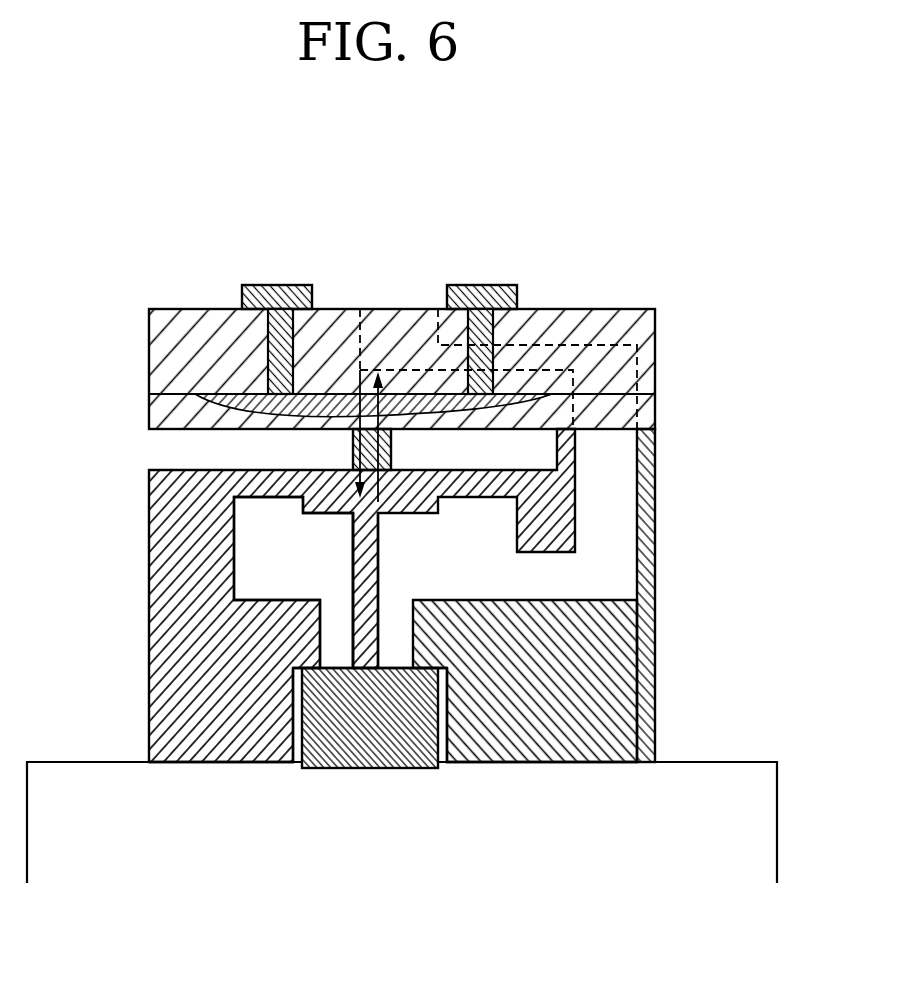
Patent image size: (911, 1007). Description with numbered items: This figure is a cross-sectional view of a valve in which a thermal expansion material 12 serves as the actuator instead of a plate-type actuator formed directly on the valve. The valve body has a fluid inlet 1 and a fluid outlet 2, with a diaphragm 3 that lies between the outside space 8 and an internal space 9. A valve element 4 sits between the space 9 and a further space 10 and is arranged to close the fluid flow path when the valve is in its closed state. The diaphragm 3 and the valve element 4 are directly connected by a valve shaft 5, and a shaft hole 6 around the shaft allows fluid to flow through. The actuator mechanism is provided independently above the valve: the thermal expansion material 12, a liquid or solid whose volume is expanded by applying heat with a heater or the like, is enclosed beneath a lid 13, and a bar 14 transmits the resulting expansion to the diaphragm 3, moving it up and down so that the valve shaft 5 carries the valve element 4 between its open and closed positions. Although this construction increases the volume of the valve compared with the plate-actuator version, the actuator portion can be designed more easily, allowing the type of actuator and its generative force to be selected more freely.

The fluid inlet 1 is at (297, 767).
The fluid outlet 2 is at (608, 503).
The diaphragm 3 is at (237, 485).
The valve element 4 is at (387, 740).
The valve shaft 5 is at (352, 632).
The shaft hole 6 is at (387, 637).
The outside space 8 is at (203, 456).
The space 9 is at (305, 545).
The space 10 is at (402, 843).
The thermal expansion material 12 is at (254, 403).
The lid 13 is at (283, 284).
The bar 14 is at (394, 447).